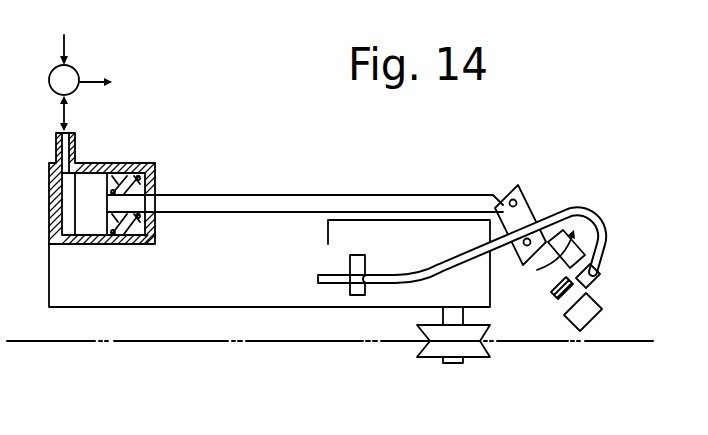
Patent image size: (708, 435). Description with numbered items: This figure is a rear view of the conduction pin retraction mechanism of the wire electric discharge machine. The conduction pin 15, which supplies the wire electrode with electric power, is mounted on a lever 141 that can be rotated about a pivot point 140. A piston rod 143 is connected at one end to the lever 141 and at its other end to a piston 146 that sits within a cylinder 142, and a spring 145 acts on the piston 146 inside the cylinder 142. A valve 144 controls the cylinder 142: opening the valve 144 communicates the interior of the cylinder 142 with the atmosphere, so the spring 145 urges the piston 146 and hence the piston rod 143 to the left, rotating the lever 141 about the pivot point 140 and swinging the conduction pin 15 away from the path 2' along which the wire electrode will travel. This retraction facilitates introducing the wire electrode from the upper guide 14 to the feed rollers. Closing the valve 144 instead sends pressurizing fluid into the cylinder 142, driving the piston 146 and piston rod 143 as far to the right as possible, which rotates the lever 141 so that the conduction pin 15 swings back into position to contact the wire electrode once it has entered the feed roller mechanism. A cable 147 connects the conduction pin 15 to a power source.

The path 2' is at (330, 376).
The upper guide 14 is at (477, 348).
The conduction pin 15 is at (583, 331).
The pivot point 140 is at (523, 266).
The lever 141 is at (542, 198).
The cylinder 142 is at (110, 163).
The piston rod 143 is at (240, 195).
The valve 144 is at (79, 69).
The spring 145 is at (153, 163).
The piston 146 is at (93, 227).
The cable 147 is at (582, 207).